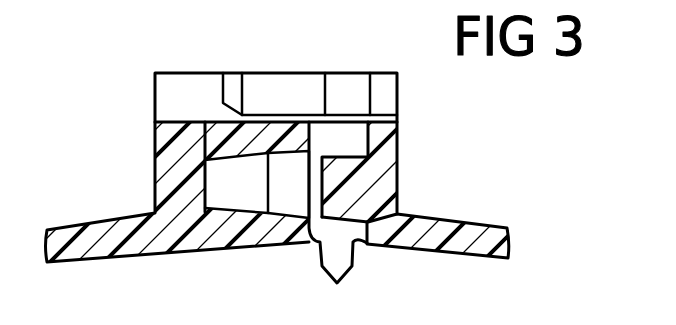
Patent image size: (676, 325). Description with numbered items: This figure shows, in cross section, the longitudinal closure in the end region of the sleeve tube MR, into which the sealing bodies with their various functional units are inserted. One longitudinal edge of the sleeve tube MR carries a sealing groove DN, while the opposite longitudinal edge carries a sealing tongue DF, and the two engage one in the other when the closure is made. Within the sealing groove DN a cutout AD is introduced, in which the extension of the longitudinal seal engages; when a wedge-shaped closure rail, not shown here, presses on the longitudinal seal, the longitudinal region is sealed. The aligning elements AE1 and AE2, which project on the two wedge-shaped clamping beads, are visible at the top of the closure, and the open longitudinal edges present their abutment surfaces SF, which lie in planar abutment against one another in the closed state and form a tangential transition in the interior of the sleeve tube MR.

The aligning element AE1 is at (347, 96).
The aligning element AE2 is at (180, 93).
The cutout AD is at (223, 193).
The sealing groove DN is at (287, 195).
The sealing tongue DF is at (350, 192).
The sleeve tube MR is at (481, 230).
The abutment surface SF is at (338, 223).